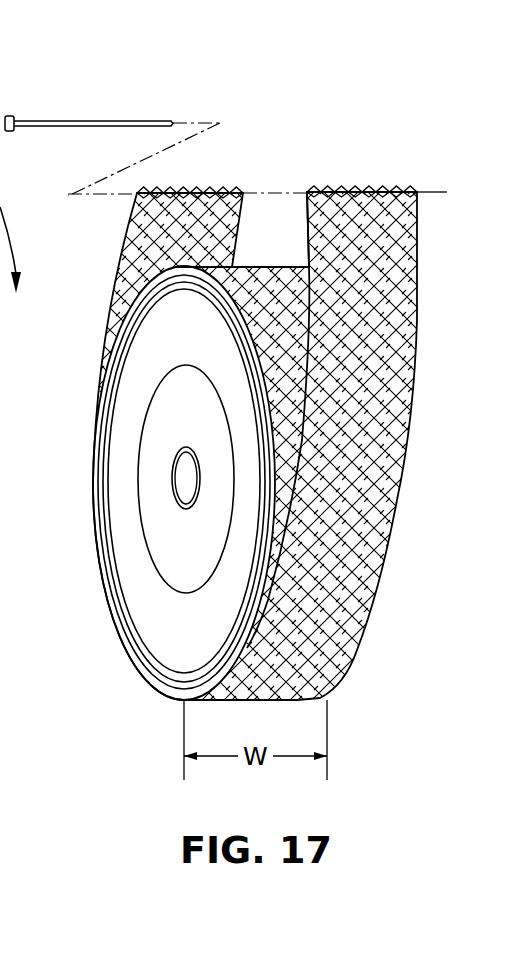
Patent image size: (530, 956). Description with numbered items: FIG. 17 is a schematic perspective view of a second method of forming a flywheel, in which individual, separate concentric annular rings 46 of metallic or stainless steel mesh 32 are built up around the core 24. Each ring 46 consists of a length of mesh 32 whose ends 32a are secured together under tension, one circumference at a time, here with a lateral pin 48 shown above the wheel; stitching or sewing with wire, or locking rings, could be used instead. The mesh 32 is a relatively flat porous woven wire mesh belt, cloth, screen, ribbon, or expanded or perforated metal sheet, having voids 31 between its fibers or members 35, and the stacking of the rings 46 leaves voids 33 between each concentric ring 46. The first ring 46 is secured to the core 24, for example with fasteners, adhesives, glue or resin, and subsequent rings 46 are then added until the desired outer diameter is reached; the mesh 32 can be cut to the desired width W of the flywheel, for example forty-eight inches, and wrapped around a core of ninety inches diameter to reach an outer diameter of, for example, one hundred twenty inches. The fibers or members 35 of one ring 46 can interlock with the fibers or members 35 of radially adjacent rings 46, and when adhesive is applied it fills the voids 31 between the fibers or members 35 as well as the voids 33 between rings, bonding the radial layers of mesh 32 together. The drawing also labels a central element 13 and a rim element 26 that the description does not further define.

The hub bore 13 is at (147, 502).
The core 24 is at (173, 550).
The rim 26 is at (167, 654).
The voids 31 is at (383, 211).
The mesh 32 is at (405, 297).
The ends 32a is at (198, 190).
The voids 33 is at (110, 570).
The fibers or members 35 is at (385, 254).
The concentric annular ring 46 is at (173, 290).
The lateral pin 48 is at (62, 121).